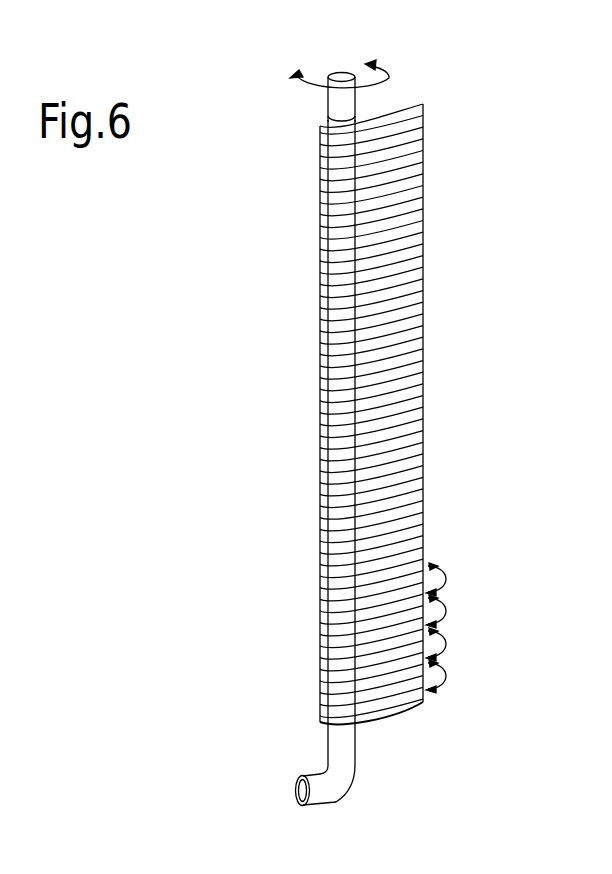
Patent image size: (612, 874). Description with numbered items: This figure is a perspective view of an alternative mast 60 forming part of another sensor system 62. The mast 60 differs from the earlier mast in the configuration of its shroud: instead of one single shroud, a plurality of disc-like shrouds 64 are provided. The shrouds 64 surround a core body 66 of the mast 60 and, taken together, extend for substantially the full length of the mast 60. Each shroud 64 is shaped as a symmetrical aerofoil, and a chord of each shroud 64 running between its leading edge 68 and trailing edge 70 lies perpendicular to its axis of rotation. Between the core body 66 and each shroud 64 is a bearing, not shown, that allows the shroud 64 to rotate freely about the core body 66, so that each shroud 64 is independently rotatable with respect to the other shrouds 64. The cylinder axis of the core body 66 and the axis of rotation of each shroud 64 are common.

The mast 60 is at (348, 173).
The sensor system 62 is at (376, 412).
The shrouds 64 is at (370, 313).
The core body 66 is at (343, 88).
The leading edge 68 is at (322, 258).
The trailing edge 70 is at (400, 227).